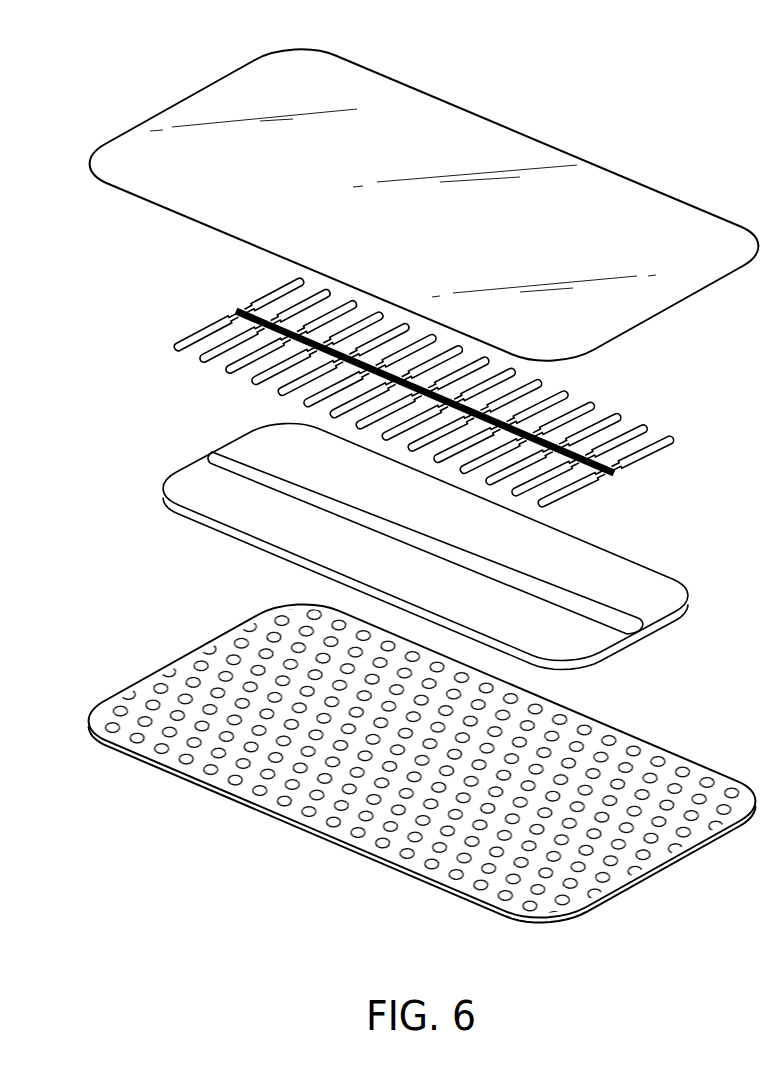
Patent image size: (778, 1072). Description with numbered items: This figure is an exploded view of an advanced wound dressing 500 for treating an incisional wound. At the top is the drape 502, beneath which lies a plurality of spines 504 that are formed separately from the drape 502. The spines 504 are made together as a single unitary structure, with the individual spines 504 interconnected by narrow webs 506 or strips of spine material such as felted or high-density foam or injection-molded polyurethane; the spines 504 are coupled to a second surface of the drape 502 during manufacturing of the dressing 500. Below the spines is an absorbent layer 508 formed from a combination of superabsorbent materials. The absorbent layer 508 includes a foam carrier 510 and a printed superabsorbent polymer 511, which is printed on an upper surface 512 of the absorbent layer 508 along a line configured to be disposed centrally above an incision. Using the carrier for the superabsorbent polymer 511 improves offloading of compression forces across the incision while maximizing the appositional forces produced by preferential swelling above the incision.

The advanced wound dressing 500 is at (105, 72).
The drape 502 is at (131, 167).
The spines 504 is at (195, 326).
The narrow webs 506 is at (243, 310).
The absorbent layer 508 is at (152, 441).
The foam carrier 510 is at (668, 584).
The printed superabsorbent polymer 511 is at (587, 607).
The upper surface 512 is at (262, 447).